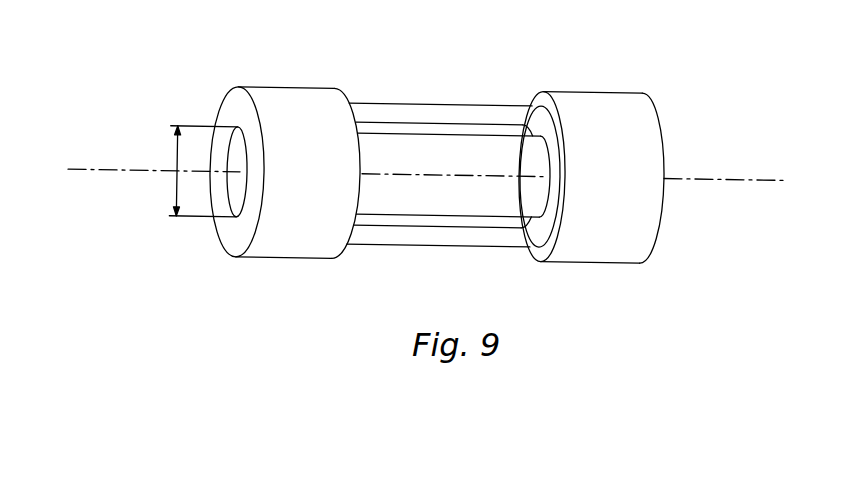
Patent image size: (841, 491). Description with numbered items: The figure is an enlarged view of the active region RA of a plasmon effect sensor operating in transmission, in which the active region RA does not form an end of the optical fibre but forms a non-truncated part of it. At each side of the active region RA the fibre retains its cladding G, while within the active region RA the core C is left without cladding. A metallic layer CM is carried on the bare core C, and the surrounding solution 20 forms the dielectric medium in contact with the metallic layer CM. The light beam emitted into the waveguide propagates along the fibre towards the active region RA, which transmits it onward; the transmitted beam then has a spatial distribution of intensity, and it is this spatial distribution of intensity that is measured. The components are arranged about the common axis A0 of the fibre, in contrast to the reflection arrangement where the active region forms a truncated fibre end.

The axis of rotation A0 is at (82, 160).
The cladding G is at (281, 80).
The solution 20 is at (433, 103).
The metallic layer CM is at (435, 232).
The core C is at (462, 204).
The active region RA is at (461, 66).